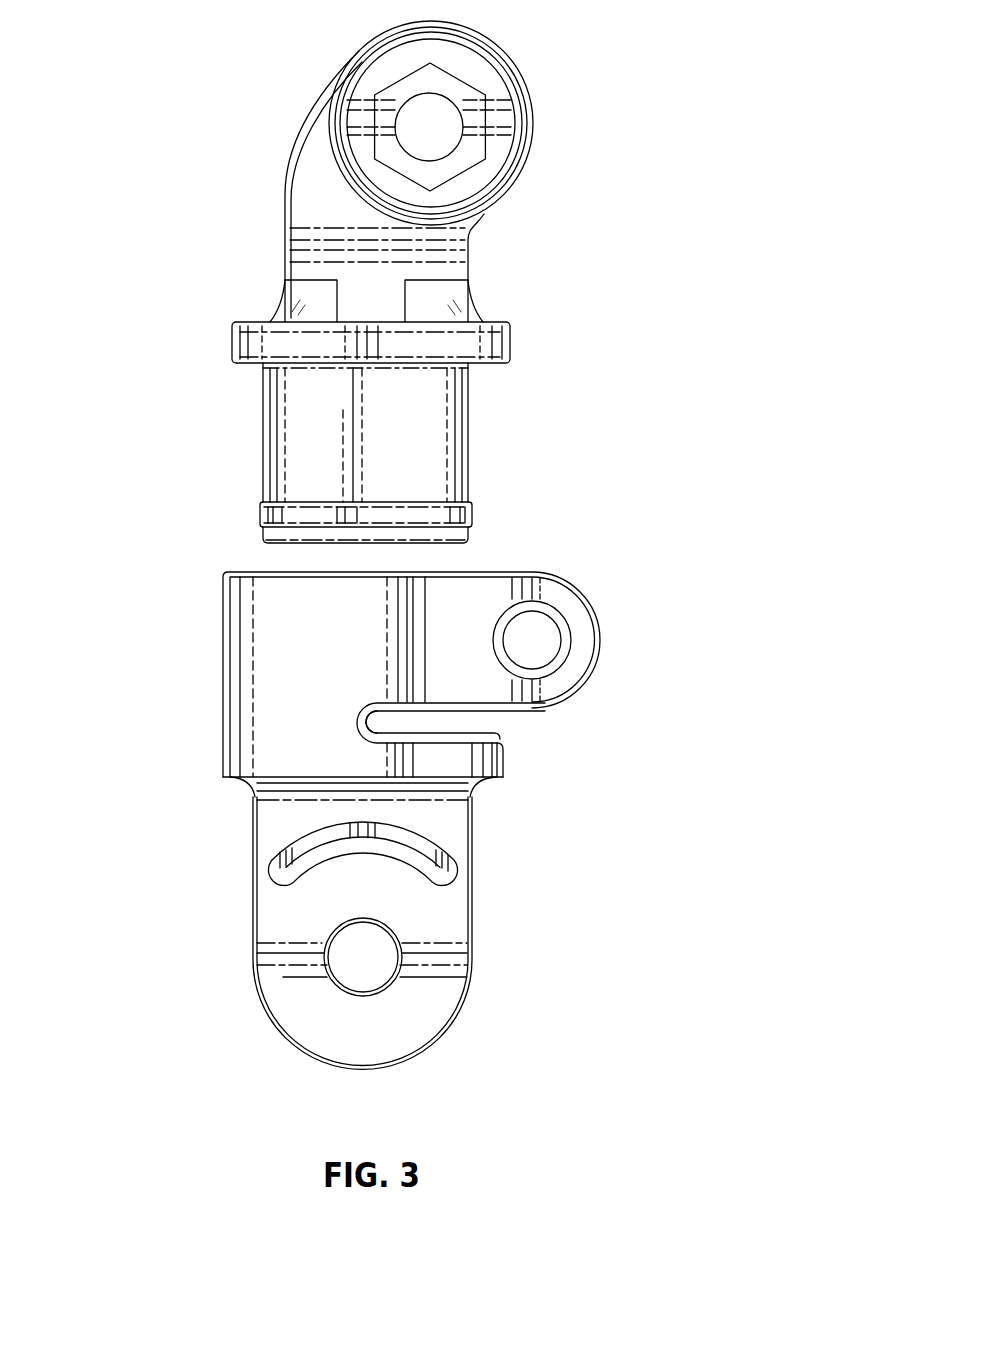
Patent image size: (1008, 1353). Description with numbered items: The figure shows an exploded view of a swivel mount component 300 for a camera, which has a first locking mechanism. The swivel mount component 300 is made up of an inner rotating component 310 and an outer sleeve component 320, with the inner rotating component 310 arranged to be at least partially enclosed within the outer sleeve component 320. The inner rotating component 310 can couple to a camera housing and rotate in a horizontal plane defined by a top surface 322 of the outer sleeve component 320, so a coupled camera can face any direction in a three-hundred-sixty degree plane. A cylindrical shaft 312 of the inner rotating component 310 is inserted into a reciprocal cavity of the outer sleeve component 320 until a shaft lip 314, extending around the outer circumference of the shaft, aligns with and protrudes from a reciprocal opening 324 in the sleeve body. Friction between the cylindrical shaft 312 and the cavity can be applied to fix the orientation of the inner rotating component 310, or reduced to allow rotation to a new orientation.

The swivel mount component 300 is at (868, 1079).
The inner rotating component 310 is at (502, 248).
The cylindrical shaft 312 is at (263, 453).
The shaft lip 314 is at (257, 515).
The outer sleeve component 320 is at (502, 863).
The top surface 322 is at (517, 562).
The reciprocal opening 324 is at (503, 725).